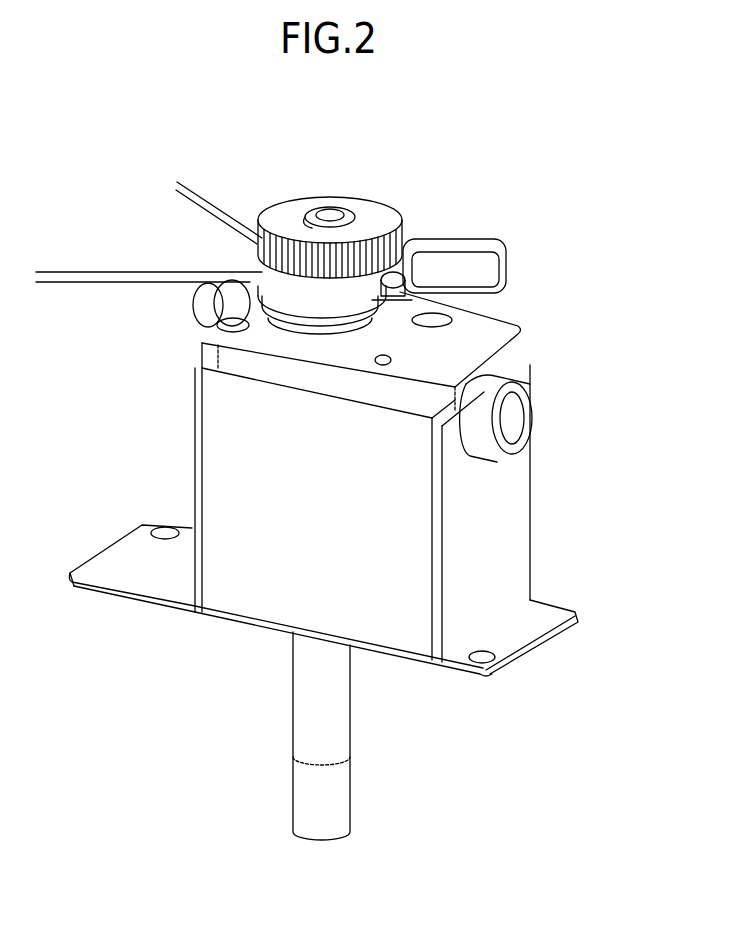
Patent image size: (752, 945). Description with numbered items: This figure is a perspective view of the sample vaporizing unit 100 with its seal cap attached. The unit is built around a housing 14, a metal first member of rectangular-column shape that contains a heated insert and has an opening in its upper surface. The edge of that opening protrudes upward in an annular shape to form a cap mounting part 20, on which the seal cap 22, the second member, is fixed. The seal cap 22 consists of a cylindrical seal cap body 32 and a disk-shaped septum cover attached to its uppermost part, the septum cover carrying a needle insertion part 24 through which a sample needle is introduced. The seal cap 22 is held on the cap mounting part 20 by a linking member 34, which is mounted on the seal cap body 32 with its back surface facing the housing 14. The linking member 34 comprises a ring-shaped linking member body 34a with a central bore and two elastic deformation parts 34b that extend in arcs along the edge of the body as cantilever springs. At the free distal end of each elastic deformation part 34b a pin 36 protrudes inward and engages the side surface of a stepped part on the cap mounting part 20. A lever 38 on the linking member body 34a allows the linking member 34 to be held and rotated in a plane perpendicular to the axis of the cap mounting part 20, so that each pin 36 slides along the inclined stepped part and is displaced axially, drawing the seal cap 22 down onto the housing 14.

The tensioning system / line 100 is at (150, 249).
The housing 14 is at (517, 522).
The cap mounting part 20 is at (330, 342).
The seal cap 22 is at (463, 211).
The needle insertion part 24 is at (330, 200).
The seal cap body 32 is at (395, 306).
The linking member 34 is at (156, 327).
The linking member body 34a is at (240, 295).
The elastic deformation part 34b is at (245, 338).
The pin 36 is at (500, 337).
The lever 38 is at (490, 270).